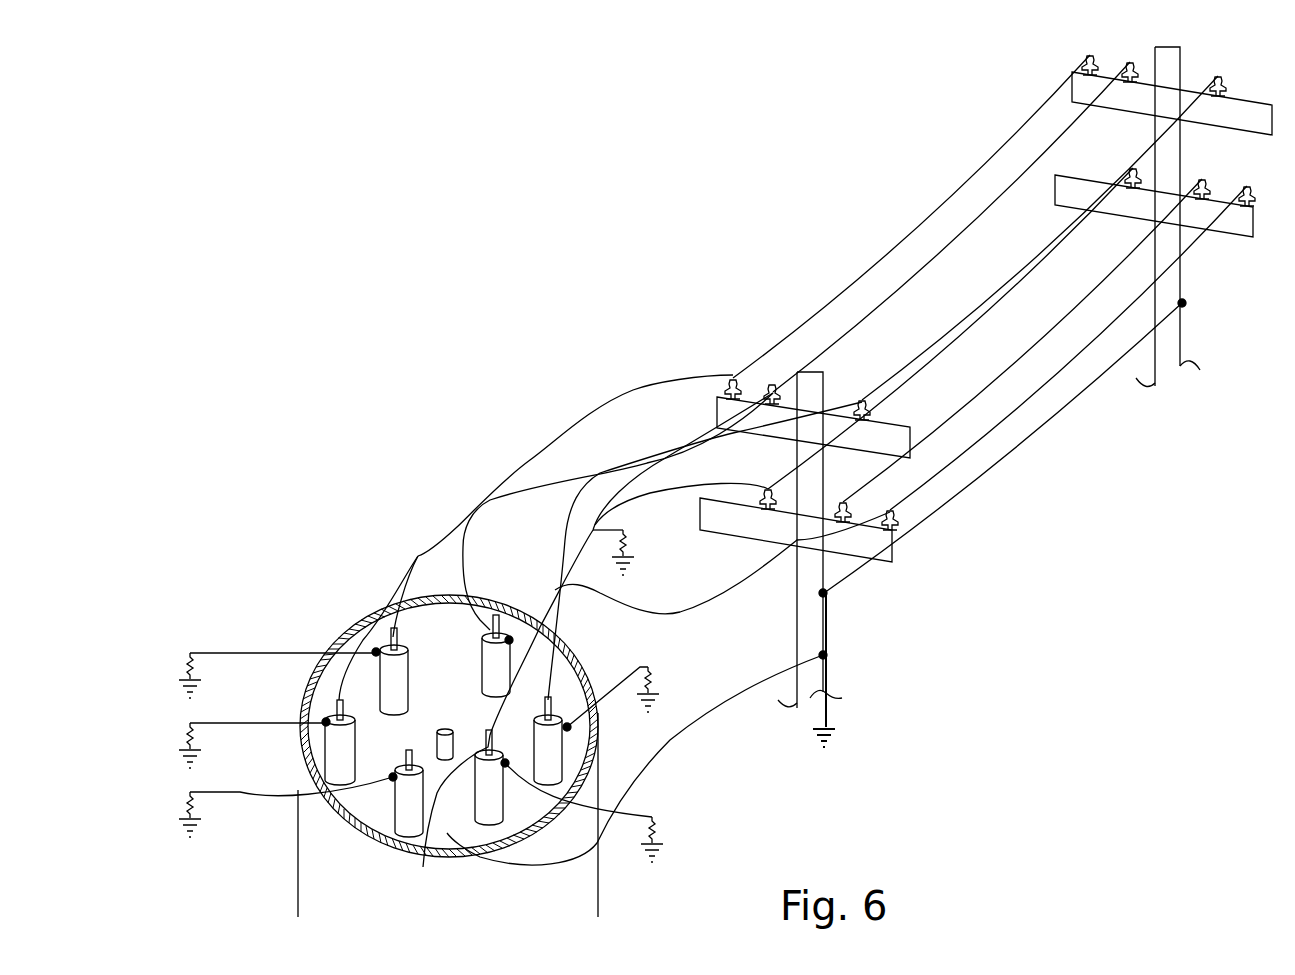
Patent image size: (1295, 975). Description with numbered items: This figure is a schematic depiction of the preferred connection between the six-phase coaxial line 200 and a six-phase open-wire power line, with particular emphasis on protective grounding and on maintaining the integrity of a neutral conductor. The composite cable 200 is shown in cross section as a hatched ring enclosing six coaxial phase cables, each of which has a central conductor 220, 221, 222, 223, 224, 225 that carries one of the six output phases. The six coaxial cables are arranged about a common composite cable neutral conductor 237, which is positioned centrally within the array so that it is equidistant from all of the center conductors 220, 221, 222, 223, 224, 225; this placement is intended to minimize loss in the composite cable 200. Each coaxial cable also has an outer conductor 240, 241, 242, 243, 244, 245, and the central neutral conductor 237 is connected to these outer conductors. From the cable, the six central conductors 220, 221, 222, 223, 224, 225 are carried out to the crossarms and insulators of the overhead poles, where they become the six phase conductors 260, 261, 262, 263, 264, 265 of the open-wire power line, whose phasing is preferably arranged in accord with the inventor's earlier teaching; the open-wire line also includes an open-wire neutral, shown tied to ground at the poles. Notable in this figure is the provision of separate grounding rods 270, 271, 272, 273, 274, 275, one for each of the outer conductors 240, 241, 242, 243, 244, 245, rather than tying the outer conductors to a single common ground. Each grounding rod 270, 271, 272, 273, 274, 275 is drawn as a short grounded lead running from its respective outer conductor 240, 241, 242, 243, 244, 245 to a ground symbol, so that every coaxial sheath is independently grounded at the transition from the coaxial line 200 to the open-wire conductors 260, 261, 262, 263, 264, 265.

The six-phase coaxial line 200 is at (333, 636).
The central conductor 220 is at (487, 620).
The central conductor 221 is at (399, 640).
The central conductor 222 is at (560, 707).
The central conductor 223 is at (324, 716).
The central conductor 224 is at (589, 645).
The central conductor 225 is at (403, 764).
The composite cable neutral conductor 237 is at (447, 730).
The outer conductor 240 is at (512, 642).
The outer conductor 241 is at (421, 662).
The outer conductor 242 is at (565, 760).
The outer conductor 243 is at (322, 752).
The outer conductor 244 is at (508, 793).
The outer conductor 245 is at (397, 818).
The phase conductor of the open-wire power line 260 is at (1047, 272).
The phase conductor of the open-wire power line 261 is at (967, 178).
The phase conductor of the open-wire power line 262 is at (1060, 337).
The phase conductor of the open-wire power line 263 is at (1042, 158).
The phase conductor of the open-wire power line 264 is at (1053, 377).
The phase conductor of the open-wire power line 265 is at (1022, 254).
The grounding rod 270 is at (629, 548).
The grounding rod 271 is at (184, 668).
The grounding rod 272 is at (655, 680).
The grounding rod 273 is at (184, 740).
The grounding rod 274 is at (660, 833).
The grounding rod 275 is at (184, 806).